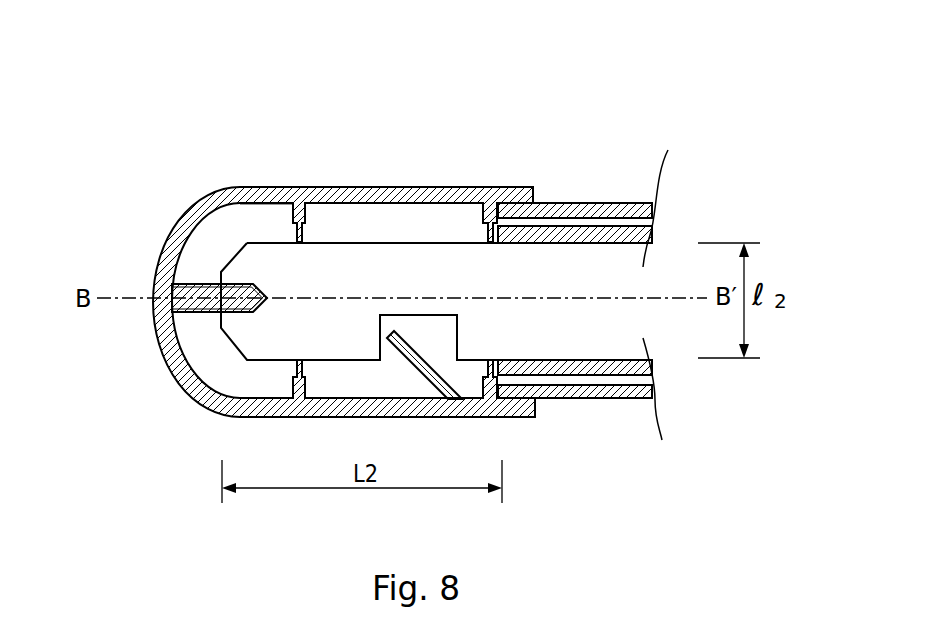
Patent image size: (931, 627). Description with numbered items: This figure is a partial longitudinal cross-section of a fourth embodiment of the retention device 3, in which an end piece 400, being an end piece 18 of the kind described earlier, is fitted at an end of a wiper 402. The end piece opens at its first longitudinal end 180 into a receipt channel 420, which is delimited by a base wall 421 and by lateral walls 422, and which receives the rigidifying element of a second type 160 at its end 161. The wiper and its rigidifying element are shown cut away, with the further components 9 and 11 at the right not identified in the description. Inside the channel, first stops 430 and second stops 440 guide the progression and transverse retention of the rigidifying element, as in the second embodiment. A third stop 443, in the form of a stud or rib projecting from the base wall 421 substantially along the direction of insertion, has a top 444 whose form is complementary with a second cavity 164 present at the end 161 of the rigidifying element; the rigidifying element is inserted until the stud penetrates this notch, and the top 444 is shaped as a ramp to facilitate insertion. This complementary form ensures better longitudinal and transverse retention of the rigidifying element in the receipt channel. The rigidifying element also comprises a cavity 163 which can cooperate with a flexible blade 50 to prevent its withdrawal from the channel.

The device for retention of the wiper blade 3 is at (482, 130).
The outer tube 9 is at (564, 203).
The inner tube 11 is at (633, 231).
The end piece 18 is at (158, 198).
The end piece 400 is at (301, 264).
The wiper 402 is at (635, 119).
The diagonal web 50 is at (427, 394).
The rigidifying element of a second type 160 is at (620, 306).
The end of the rigidifying element 161 is at (460, 290).
The cavity 163 is at (442, 335).
The second cavity 164 is at (268, 297).
The first longitudinal end 180 is at (549, 424).
The receipt channel 420 is at (370, 393).
The base wall 421 is at (212, 368).
The upper pocket 422 is at (403, 207).
The rib 430 is at (305, 213).
The upper wall 440 is at (245, 232).
The third stop 443 is at (212, 302).
The top 444 is at (238, 313).